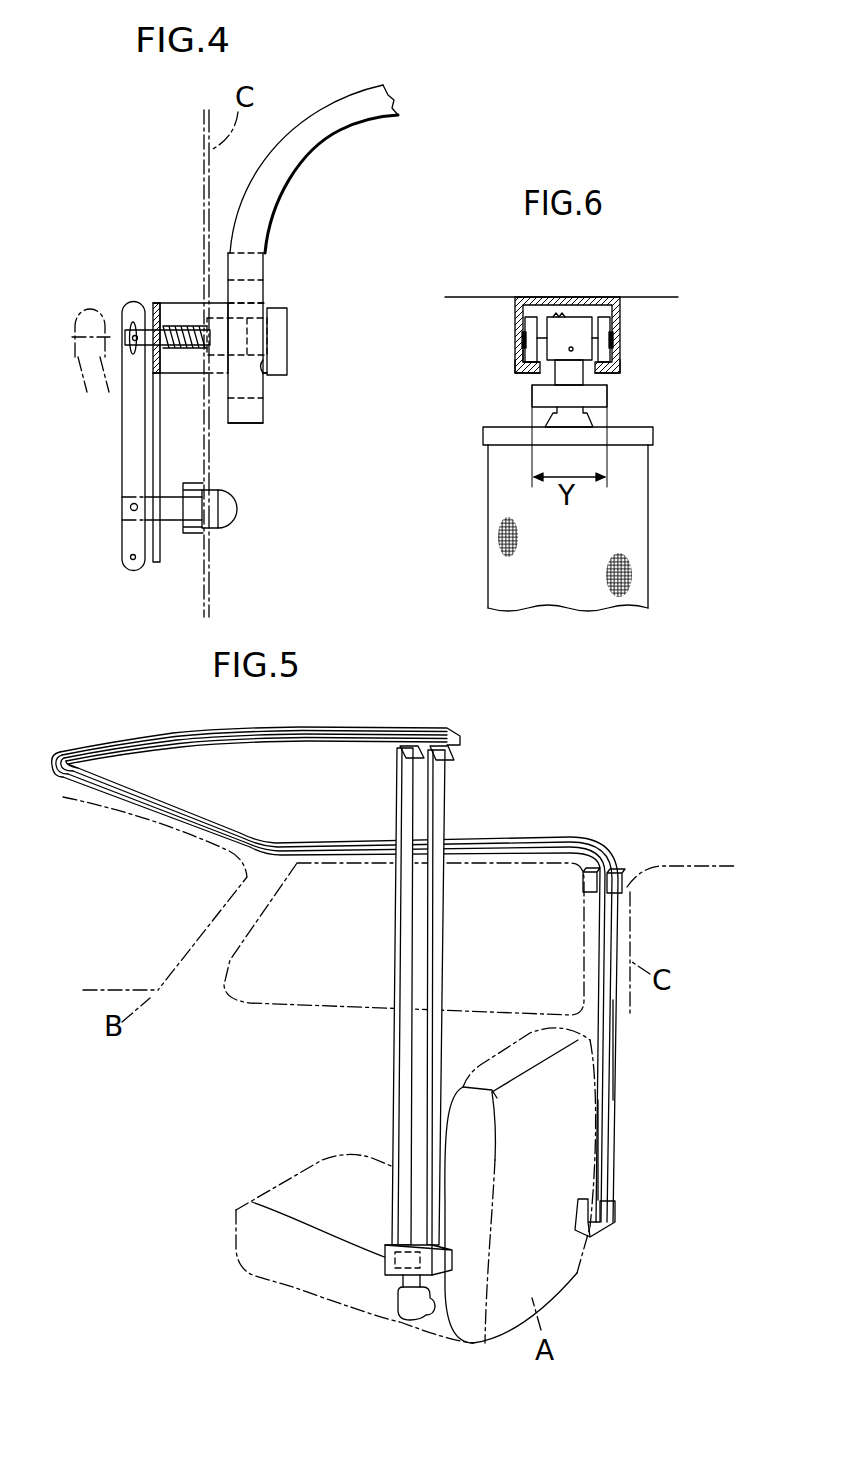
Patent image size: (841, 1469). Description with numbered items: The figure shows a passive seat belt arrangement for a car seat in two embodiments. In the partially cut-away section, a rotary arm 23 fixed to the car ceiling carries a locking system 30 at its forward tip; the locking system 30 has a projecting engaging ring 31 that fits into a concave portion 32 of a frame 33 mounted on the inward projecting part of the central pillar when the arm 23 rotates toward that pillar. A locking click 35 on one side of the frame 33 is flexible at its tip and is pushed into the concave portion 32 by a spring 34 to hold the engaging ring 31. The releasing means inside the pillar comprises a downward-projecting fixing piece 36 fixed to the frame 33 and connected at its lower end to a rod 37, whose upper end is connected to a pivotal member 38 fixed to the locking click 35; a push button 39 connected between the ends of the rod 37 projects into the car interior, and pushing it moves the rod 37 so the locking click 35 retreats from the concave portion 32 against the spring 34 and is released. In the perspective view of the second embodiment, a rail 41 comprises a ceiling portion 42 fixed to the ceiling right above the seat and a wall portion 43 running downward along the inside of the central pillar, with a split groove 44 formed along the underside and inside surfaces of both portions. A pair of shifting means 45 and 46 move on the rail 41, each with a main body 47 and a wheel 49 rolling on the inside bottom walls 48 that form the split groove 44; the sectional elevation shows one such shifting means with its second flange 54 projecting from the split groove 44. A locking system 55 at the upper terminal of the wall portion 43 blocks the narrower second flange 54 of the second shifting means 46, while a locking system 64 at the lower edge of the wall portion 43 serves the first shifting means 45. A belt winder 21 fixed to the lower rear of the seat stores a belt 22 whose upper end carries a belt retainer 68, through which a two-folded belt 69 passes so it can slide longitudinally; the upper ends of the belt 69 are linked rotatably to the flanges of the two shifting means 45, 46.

In FIG. 5, the belt winder 21 is at (410, 1303).
In FIG. 5, the belt 22 is at (402, 1282).
In FIG. 4, the rotary arm 23 is at (382, 102).
In FIG. 4, the locking system 30 is at (268, 293).
In FIG. 4, the engaging ring 31 is at (268, 417).
In FIG. 4, the concave portion 32 is at (265, 374).
In FIG. 4, the frame 33 is at (287, 350).
In FIG. 4, the spring 34 is at (193, 337).
In FIG. 4, the locking click 35 is at (259, 319).
In FIG. 4, the fixing piece 36 is at (155, 423).
In FIG. 4, the rod 37 is at (132, 463).
In FIG. 4, the pivotal member 38 is at (147, 338).
In FIG. 4, the push button 39 is at (227, 508).
In FIG. 6, the rail 41 is at (527, 295).
In FIG. 5, the rail 41 is at (100, 741).
In FIG. 5, the ceiling portion 42 is at (177, 808).
In FIG. 5, the wall portion 43 is at (613, 1068).
In FIG. 6, the split groove 44 is at (545, 366).
In FIG. 5, the split groove 44 is at (603, 1145).
In FIG. 5, the first shifting means 45 is at (413, 746).
In FIG. 6, the second shifting means 46 is at (556, 313).
In FIG. 5, the second shifting means 46 is at (450, 748).
In FIG. 6, the main body 47 is at (580, 328).
In FIG. 6, the inside bottom walls 48 is at (613, 372).
In FIG. 6, the wheel 49 is at (603, 328).
In FIG. 6, the second flange 54 is at (607, 398).
In FIG. 5, the locking system 55 is at (625, 873).
In FIG. 5, the locking system 64 is at (615, 1219).
In FIG. 5, the belt retainer 68 is at (442, 1280).
In FIG. 6, the belt 69 is at (633, 545).
In FIG. 5, the belt 69 is at (436, 1053).